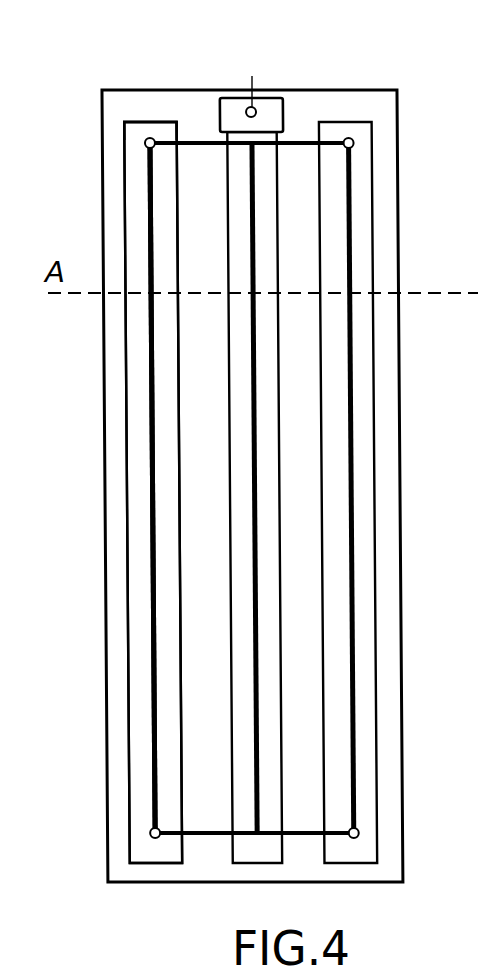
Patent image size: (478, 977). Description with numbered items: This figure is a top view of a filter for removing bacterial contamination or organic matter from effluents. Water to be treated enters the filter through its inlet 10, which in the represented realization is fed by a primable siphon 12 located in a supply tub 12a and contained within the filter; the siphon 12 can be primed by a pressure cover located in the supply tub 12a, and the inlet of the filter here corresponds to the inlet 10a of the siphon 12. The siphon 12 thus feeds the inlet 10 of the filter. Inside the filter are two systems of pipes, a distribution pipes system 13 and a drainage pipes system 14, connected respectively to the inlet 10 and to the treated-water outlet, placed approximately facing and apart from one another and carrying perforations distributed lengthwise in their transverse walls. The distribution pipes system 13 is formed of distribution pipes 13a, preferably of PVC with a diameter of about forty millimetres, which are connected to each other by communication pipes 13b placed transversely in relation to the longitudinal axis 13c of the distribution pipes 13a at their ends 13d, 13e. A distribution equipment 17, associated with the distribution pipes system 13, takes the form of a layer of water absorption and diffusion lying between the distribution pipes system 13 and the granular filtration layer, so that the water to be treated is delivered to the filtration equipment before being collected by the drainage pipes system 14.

The inlet 10 is at (258, 133).
The inlet of the siphon 10a is at (252, 70).
The siphon 12 is at (248, 106).
The supply tub 12a is at (269, 103).
The distribution pipes system 13 is at (147, 207).
The distribution pipes 13a is at (151, 560).
The communication pipes 13b is at (298, 142).
The longitudinal axis 13c is at (148, 126).
The end of distribution pipes 13d is at (147, 148).
The end of distribution pipes 13e is at (151, 833).
The drainage pipes system 14 is at (92, 707).
The distribution equipment 17 is at (146, 453).